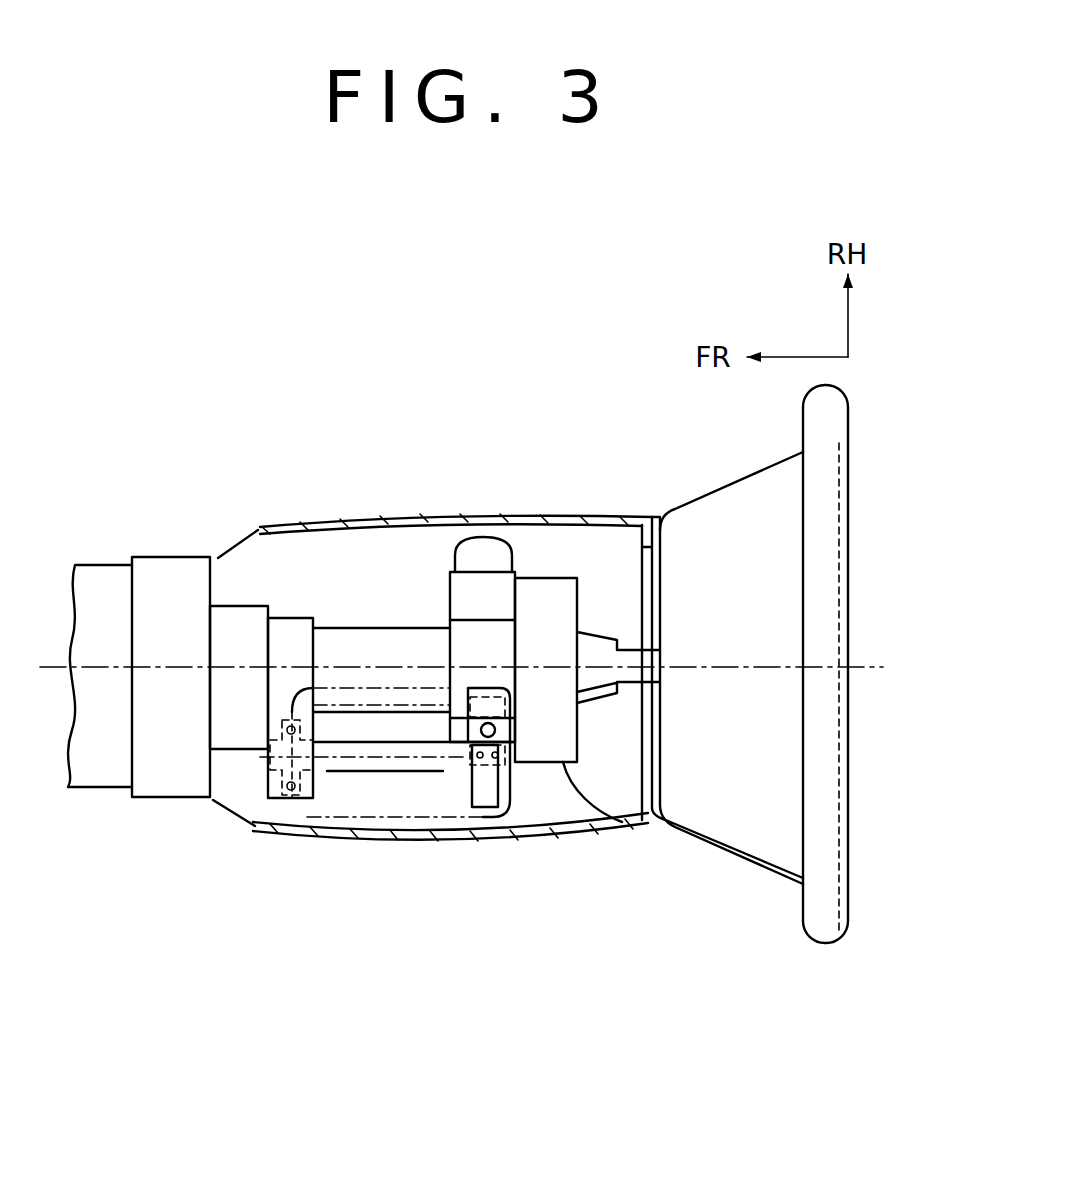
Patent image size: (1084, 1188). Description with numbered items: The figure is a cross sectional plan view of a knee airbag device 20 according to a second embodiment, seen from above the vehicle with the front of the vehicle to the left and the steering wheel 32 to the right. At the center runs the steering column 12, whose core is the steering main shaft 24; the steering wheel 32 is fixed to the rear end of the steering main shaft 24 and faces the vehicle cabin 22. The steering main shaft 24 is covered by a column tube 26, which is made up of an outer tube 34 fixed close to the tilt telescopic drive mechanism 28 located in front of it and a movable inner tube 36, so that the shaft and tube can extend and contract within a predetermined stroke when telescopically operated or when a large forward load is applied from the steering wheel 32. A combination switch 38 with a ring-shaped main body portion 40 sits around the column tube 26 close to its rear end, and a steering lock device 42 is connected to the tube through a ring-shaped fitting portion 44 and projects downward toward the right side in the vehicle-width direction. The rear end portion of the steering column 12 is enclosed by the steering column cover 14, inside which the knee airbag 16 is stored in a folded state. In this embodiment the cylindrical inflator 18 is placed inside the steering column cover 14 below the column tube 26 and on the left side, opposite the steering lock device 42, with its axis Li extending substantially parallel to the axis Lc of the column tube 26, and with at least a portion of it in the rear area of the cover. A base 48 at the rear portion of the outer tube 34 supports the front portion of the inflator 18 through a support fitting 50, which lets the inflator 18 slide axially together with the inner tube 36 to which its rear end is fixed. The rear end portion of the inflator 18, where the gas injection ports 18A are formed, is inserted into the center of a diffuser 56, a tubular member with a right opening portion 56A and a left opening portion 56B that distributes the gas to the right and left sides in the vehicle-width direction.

The steering column 12 is at (547, 478).
The steering column cover 14 is at (427, 510).
The knee airbag 16 is at (377, 845).
The inflator 18 is at (361, 778).
The gas injection ports 18A is at (465, 760).
The knee airbag device 20 is at (364, 856).
The vehicle cabin 22 is at (704, 961).
The steering main shaft 24 is at (638, 657).
The column tube 26 is at (362, 443).
The tilt telescopic drive mechanism 28 is at (115, 563).
The steering wheel 32 is at (848, 610).
The outer tube 34 is at (258, 604).
The inner tube 36 is at (355, 626).
The combination switch 38 is at (548, 574).
The main body portion 40 is at (627, 820).
The steering lock device 42 is at (485, 536).
The fitting portion 44 is at (447, 653).
The base 48 is at (316, 638).
The support fitting 50 is at (270, 792).
The diffuser 56 is at (475, 744).
The right opening portion 56A is at (445, 566).
The left opening portion 56B is at (482, 812).
The axis of the inflator Li is at (262, 836).
The axis of the column tube Lc is at (863, 667).